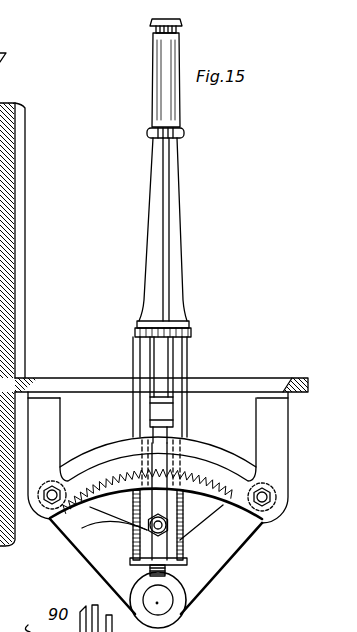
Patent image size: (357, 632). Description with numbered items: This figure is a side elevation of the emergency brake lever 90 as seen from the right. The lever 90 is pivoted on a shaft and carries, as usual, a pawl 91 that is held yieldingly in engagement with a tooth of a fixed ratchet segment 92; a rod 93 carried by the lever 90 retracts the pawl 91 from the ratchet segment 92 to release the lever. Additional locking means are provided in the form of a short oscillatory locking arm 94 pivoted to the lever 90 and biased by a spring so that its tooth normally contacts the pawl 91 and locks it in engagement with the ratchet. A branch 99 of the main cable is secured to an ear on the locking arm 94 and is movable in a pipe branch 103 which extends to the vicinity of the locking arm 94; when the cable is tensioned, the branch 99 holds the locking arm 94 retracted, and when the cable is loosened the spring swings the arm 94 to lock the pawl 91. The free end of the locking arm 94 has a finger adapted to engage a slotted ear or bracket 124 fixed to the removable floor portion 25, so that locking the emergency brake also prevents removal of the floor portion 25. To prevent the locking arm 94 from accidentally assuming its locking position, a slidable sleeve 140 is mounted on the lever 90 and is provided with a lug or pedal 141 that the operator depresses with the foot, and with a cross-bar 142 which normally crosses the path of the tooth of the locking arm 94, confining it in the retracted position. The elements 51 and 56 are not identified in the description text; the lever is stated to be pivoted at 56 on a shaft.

The floor portion 25 is at (297, 378).
The wall 51 is at (22, 152).
The hub 56 is at (160, 603).
The emergency brake lever 90 is at (175, 282).
The pawl 91 is at (165, 425).
The ratchet segment 92 is at (117, 472).
The rod 93 is at (165, 230).
The locking arm 94 is at (170, 522).
The cable branch 99 is at (146, 533).
The pipe branch 103 is at (212, 567).
The slotted bracket 124 is at (277, 435).
The slidable sleeve 140 is at (137, 372).
The pedal 141 is at (136, 322).
The cross-bar 142 is at (82, 528).